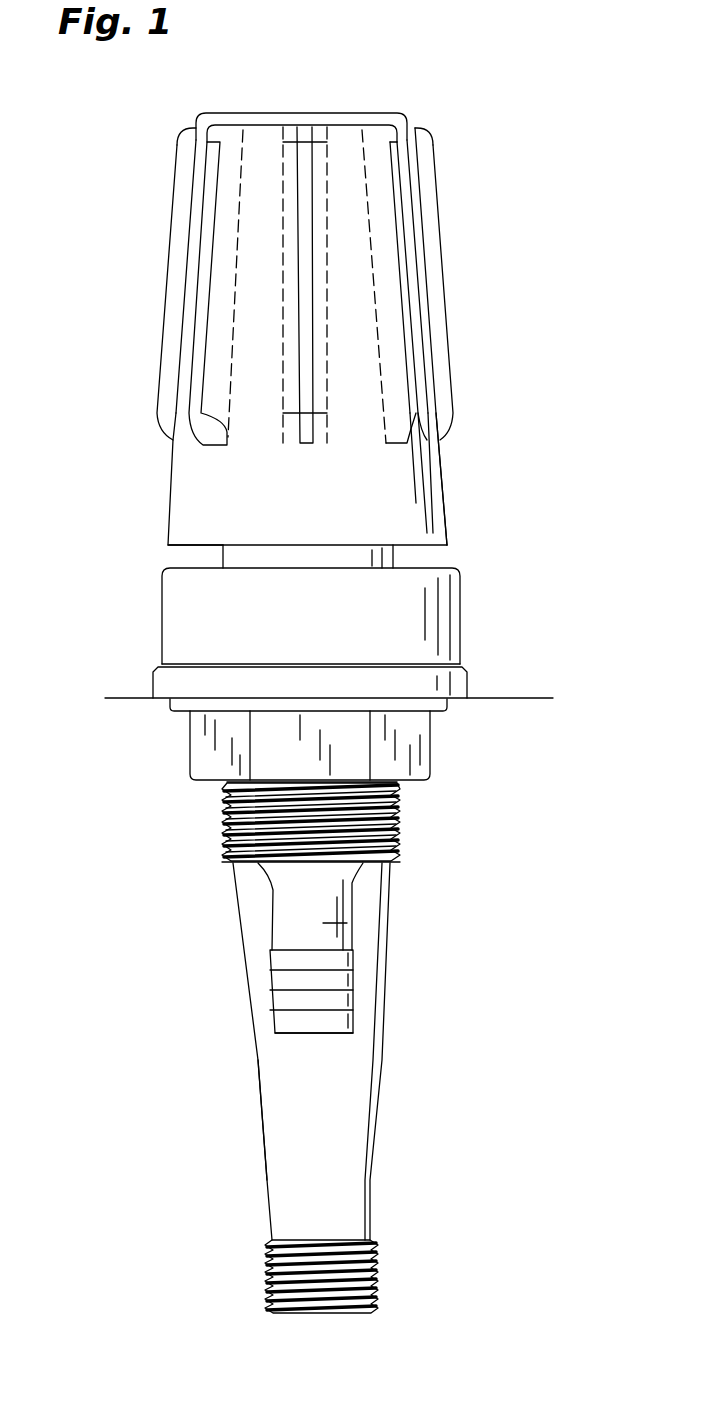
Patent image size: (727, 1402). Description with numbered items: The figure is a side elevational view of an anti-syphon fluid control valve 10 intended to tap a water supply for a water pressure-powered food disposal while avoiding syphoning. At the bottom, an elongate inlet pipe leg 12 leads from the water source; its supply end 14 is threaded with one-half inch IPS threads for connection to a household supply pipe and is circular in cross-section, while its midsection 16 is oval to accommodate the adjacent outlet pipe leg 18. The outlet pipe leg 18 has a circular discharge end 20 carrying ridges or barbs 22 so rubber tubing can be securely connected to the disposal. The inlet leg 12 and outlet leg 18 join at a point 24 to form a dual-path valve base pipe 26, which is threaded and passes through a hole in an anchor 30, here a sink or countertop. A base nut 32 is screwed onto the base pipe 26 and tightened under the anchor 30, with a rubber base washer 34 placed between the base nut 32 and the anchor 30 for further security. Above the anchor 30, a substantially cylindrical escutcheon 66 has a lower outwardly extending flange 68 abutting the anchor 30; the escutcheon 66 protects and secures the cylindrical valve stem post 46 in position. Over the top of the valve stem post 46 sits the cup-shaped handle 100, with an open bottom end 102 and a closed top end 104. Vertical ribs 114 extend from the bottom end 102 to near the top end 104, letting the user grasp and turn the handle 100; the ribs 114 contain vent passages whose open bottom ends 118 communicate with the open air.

The anti-syphon fluid control valve 10 is at (158, 163).
The inlet pipe leg 12 is at (292, 1092).
The supply end 14 is at (265, 1282).
The midsection 16 is at (287, 1155).
The outlet pipe leg 18 is at (353, 970).
The discharge end 20 is at (327, 1033).
The ridges or barbs 22 is at (355, 990).
The point 24 is at (360, 878).
The dual-path valve base pipe 26 is at (400, 818).
The anchor 30 is at (527, 698).
The base nut 32 is at (430, 748).
The base washer 34 is at (447, 703).
The valve stem post 46 is at (434, 566).
The escutcheon 66 is at (460, 615).
The lower outwardly extending flange 68 is at (468, 678).
The handle 100 is at (418, 190).
The open bottom end 102 is at (457, 570).
The closed top end 104 is at (363, 123).
The vertical ribs 114 is at (440, 302).
The open bottom ends 118 is at (193, 548).